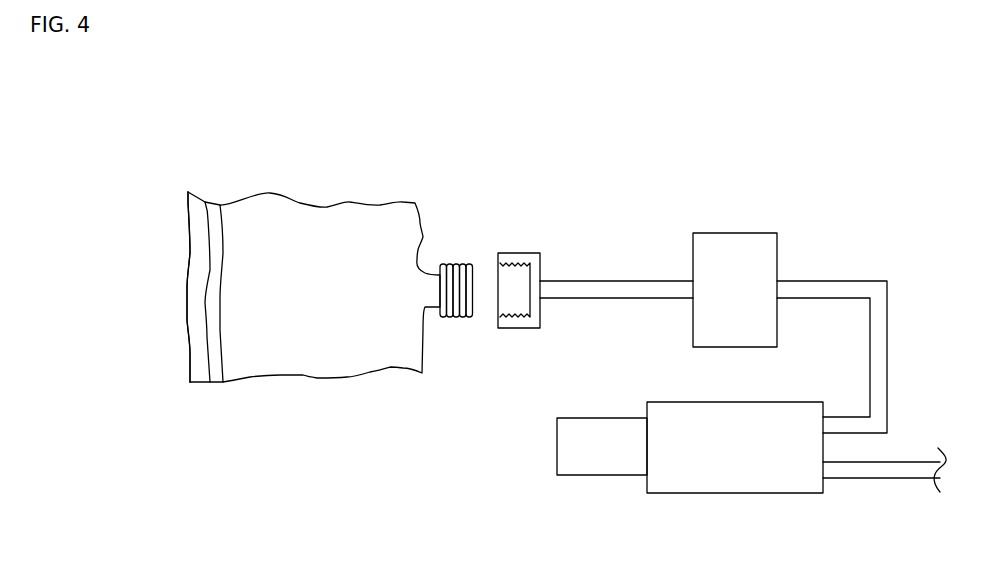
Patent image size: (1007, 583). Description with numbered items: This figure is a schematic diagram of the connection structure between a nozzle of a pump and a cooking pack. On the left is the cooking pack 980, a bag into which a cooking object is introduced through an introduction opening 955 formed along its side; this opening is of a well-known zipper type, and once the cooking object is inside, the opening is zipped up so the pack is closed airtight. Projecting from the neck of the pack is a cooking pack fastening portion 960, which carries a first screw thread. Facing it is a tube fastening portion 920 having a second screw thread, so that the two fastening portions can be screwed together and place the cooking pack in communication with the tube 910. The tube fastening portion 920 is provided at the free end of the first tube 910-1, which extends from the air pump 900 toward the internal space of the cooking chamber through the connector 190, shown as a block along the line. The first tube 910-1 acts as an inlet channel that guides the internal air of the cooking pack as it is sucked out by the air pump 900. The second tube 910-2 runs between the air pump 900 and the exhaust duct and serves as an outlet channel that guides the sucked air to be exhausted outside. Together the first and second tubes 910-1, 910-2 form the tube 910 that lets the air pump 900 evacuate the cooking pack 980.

The bag 980 is at (315, 238).
The cooking pack fastening portion 960 is at (448, 257).
The introduction opening 955 is at (187, 355).
The tube fastening portion 920 is at (518, 255).
The connector 190 is at (715, 247).
The tube 910 is at (859, 270).
The first tube 910-1 is at (827, 288).
The second tube 910-2 is at (922, 470).
The air pump 900 is at (735, 494).